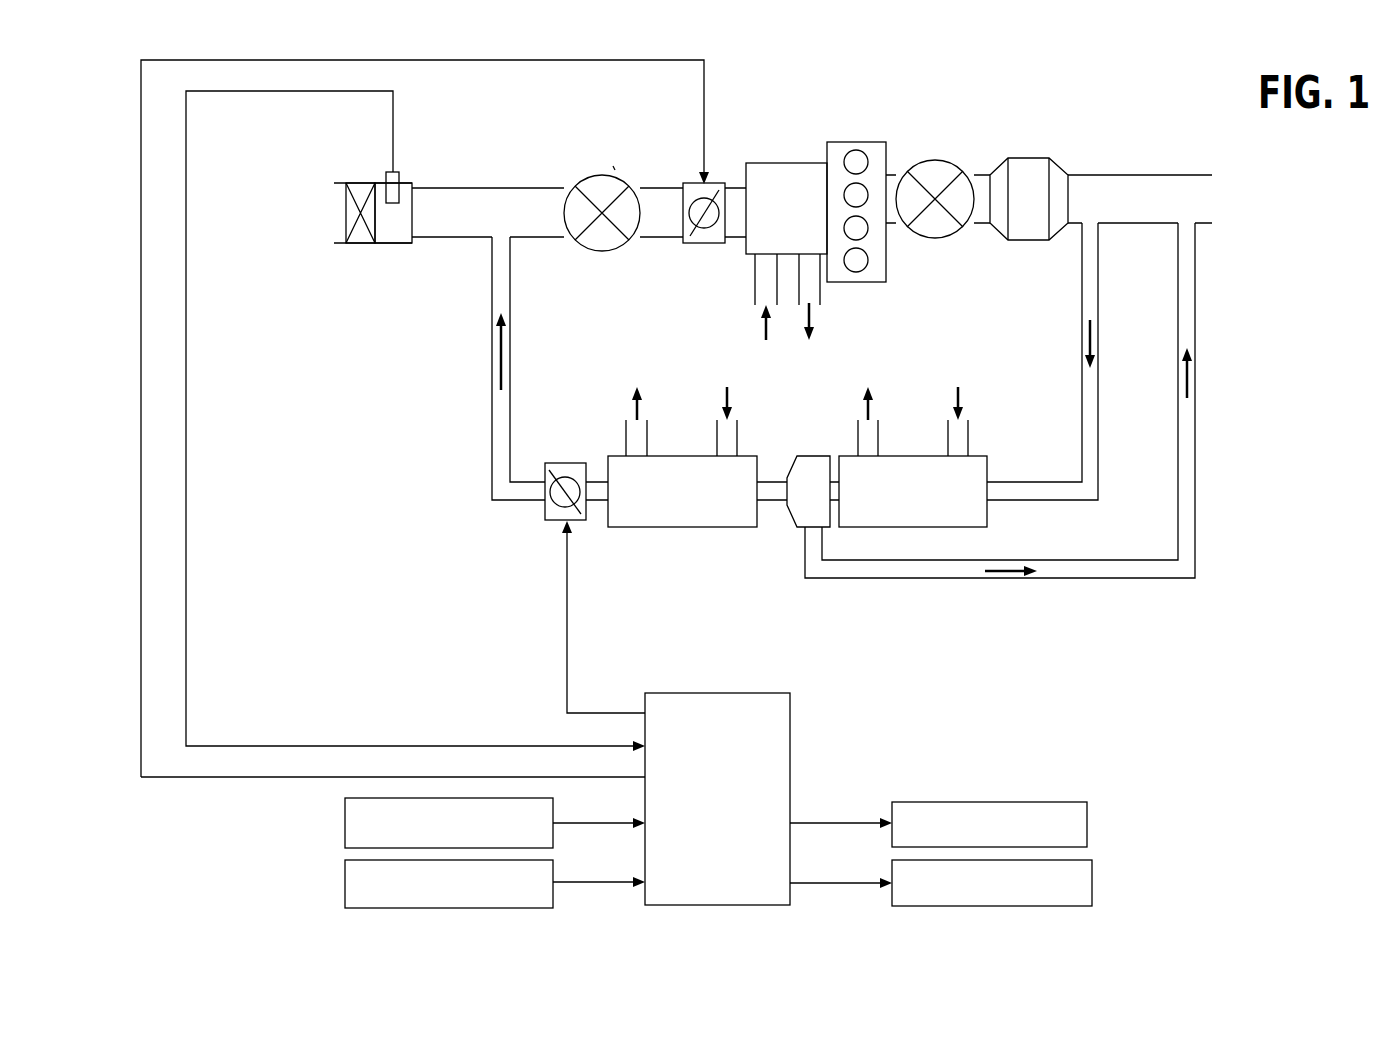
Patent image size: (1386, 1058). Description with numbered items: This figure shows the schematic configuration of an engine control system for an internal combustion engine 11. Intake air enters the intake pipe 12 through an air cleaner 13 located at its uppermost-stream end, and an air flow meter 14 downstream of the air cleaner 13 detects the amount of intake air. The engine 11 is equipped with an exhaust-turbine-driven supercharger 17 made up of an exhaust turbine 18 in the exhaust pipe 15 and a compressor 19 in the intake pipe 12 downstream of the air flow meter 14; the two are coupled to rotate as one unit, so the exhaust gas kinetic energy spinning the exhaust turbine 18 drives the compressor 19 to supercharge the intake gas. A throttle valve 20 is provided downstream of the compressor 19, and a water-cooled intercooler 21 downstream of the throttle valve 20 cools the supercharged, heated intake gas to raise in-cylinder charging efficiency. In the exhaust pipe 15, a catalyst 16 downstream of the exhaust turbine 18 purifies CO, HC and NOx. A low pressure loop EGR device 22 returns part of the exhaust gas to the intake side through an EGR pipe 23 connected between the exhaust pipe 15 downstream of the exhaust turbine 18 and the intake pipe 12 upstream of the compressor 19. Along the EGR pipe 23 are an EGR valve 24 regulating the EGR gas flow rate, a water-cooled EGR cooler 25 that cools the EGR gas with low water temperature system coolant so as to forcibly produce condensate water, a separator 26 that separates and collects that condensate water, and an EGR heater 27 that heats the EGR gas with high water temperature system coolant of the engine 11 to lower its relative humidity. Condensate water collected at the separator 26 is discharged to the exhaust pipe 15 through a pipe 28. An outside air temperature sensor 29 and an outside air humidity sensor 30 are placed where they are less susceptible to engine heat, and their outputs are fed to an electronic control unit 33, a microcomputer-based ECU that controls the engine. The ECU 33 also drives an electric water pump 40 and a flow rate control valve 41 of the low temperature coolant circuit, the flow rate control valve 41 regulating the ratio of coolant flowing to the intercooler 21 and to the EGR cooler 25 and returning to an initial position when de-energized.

The internal combustion engine 11 is at (862, 141).
The intake pipe 12 is at (470, 187).
The air cleaner 13 is at (346, 212).
The air flow meter 14 is at (390, 172).
The exhaust pipe 15 is at (1145, 175).
The catalyst 16 is at (1030, 158).
The supercharger 17 is at (613, 166).
The exhaust turbine 18 is at (940, 160).
The compressor 19 is at (590, 178).
The throttle valve 20 is at (704, 243).
The intercooler 21 is at (785, 163).
The EGR device 22 is at (587, 530).
The EGR pipe 23 is at (492, 322).
The EGR valve 24 is at (568, 463).
The EGR cooler 25 is at (987, 512).
The separator 26 is at (793, 517).
The EGR heater 27 is at (683, 527).
The pipe 28 is at (963, 578).
The outside air temperature sensor 29 is at (345, 821).
The outside air humidity sensor 30 is at (345, 880).
The electronic control unit 33 is at (718, 693).
The water pump 40 is at (1087, 822).
The flow rate control valve 41 is at (1092, 882).